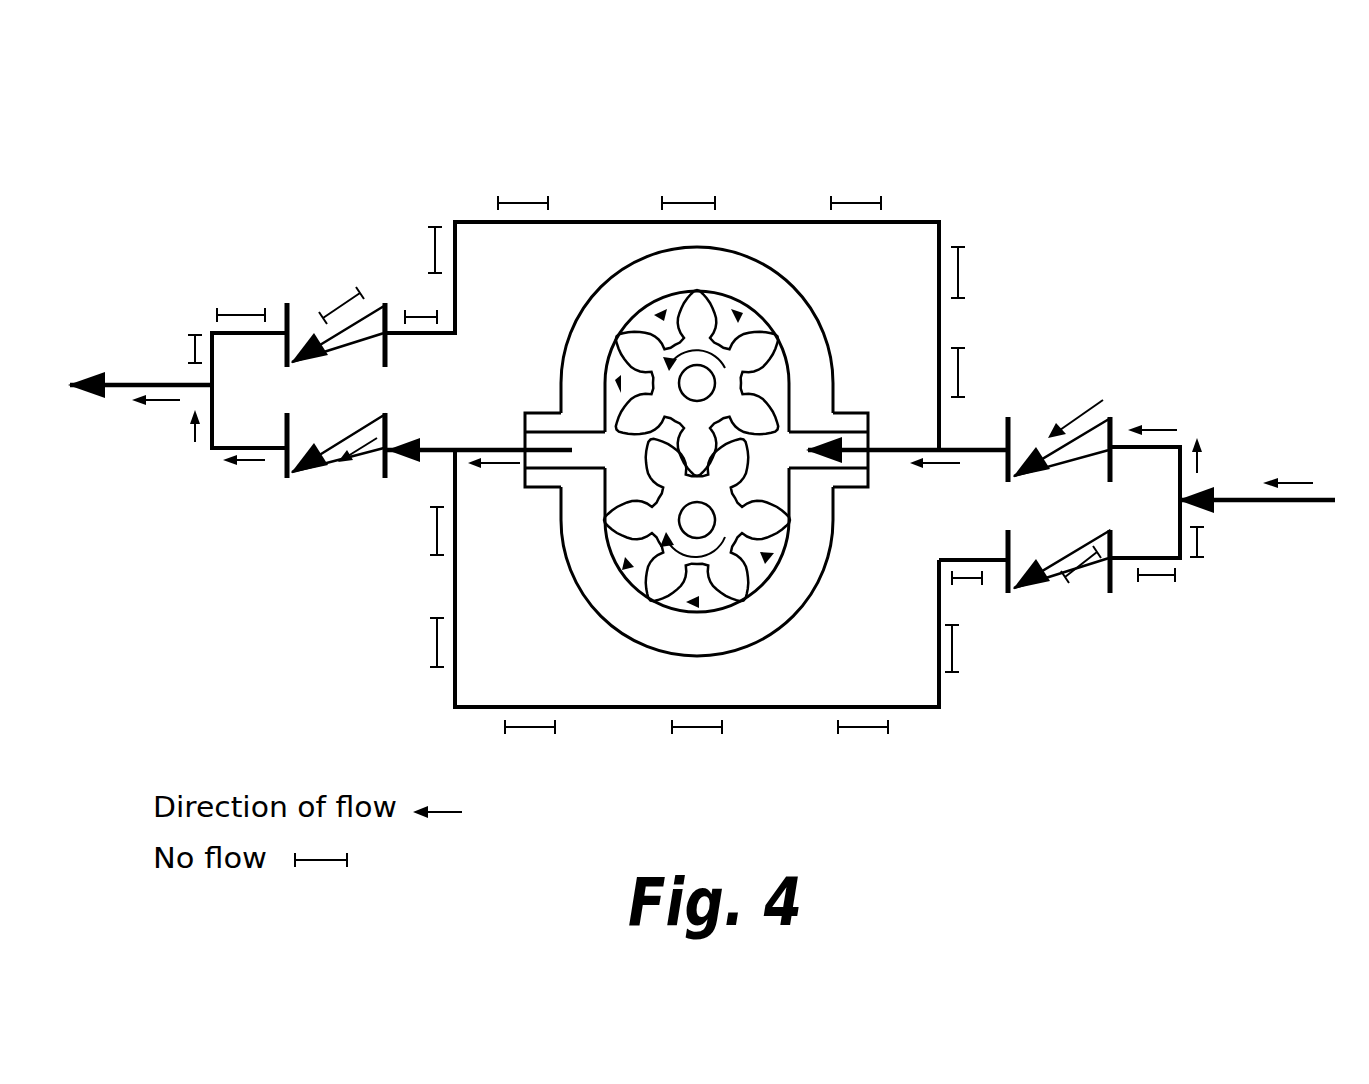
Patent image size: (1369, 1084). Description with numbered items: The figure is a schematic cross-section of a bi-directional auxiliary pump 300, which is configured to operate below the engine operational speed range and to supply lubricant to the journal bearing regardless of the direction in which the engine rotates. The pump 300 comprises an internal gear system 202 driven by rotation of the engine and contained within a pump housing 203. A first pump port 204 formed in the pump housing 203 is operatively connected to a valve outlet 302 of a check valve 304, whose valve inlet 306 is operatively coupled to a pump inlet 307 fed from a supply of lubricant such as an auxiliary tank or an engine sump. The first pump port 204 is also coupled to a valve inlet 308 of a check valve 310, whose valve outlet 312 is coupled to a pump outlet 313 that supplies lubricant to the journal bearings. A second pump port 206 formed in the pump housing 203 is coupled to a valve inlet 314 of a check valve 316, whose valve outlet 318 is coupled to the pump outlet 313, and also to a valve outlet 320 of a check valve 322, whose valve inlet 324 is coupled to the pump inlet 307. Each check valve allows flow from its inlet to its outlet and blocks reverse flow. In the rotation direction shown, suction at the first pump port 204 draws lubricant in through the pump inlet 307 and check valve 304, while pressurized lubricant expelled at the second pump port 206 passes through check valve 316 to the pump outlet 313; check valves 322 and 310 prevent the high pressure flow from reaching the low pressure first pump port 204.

The bi-directional auxiliary pump 300 is at (1205, 102).
The internal gear system 202 is at (771, 358).
The pump housing 203 is at (783, 279).
The first pump port 204 is at (882, 440).
The second pump port 206 is at (510, 477).
The valve outlet 302 is at (1007, 447).
The check valve 304 is at (1078, 413).
The valve inlet 306 is at (1113, 432).
The pump inlet 307 is at (1183, 497).
The valve inlet 308 is at (388, 330).
The check valve 310 is at (350, 313).
The valve outlet 312 is at (285, 332).
The pump outlet 313 is at (207, 384).
The valve inlet 314 is at (388, 455).
The check valve 316 is at (350, 442).
The valve outlet 318 is at (284, 453).
The valve outlet 320 is at (1006, 565).
The check valve 322 is at (1082, 562).
The valve inlet 324 is at (1113, 562).